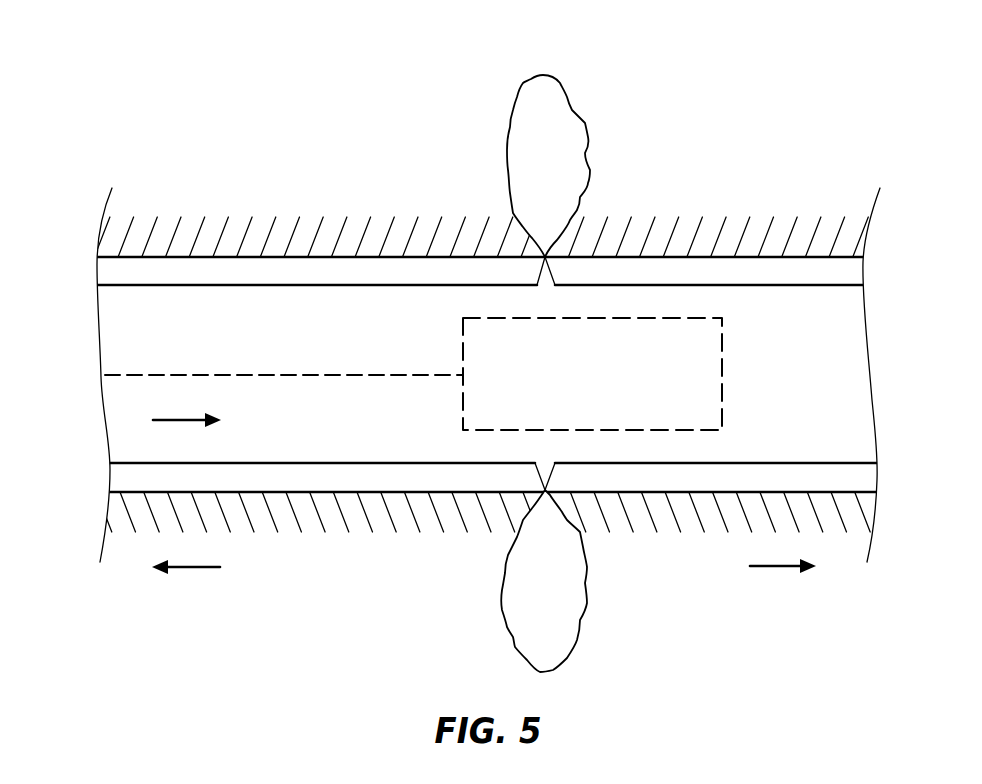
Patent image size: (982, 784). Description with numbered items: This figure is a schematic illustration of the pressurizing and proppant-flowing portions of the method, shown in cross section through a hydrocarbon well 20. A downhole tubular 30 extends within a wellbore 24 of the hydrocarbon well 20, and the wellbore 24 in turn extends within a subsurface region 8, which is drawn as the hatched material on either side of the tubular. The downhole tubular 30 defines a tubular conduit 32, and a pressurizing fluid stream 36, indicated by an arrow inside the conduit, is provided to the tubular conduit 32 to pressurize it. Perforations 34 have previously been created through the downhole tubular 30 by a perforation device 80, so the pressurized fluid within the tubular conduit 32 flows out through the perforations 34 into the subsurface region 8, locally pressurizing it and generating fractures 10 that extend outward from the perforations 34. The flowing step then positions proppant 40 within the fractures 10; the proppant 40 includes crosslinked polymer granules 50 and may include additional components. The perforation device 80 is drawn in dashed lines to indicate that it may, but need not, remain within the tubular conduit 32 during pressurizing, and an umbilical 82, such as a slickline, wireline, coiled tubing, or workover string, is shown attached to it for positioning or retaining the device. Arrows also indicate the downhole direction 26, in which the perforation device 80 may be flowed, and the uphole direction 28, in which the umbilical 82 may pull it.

The subsurface region 8 is at (259, 236).
The fractures 10 is at (514, 96).
The hydrocarbon well 20 is at (467, 350).
The wellbore 24 is at (185, 256).
The downhole direction 26 is at (780, 571).
The uphole direction 28 is at (195, 572).
The downhole tubular 30 is at (717, 276).
The tubular conduit 32 is at (783, 310).
The perforations 34 is at (540, 273).
The pressurizing fluid stream 36 is at (176, 424).
The proppant 40 is at (552, 125).
The crosslinked polymer granules 50 is at (568, 160).
The perforation device 80 is at (724, 371).
The umbilical 82 is at (305, 372).